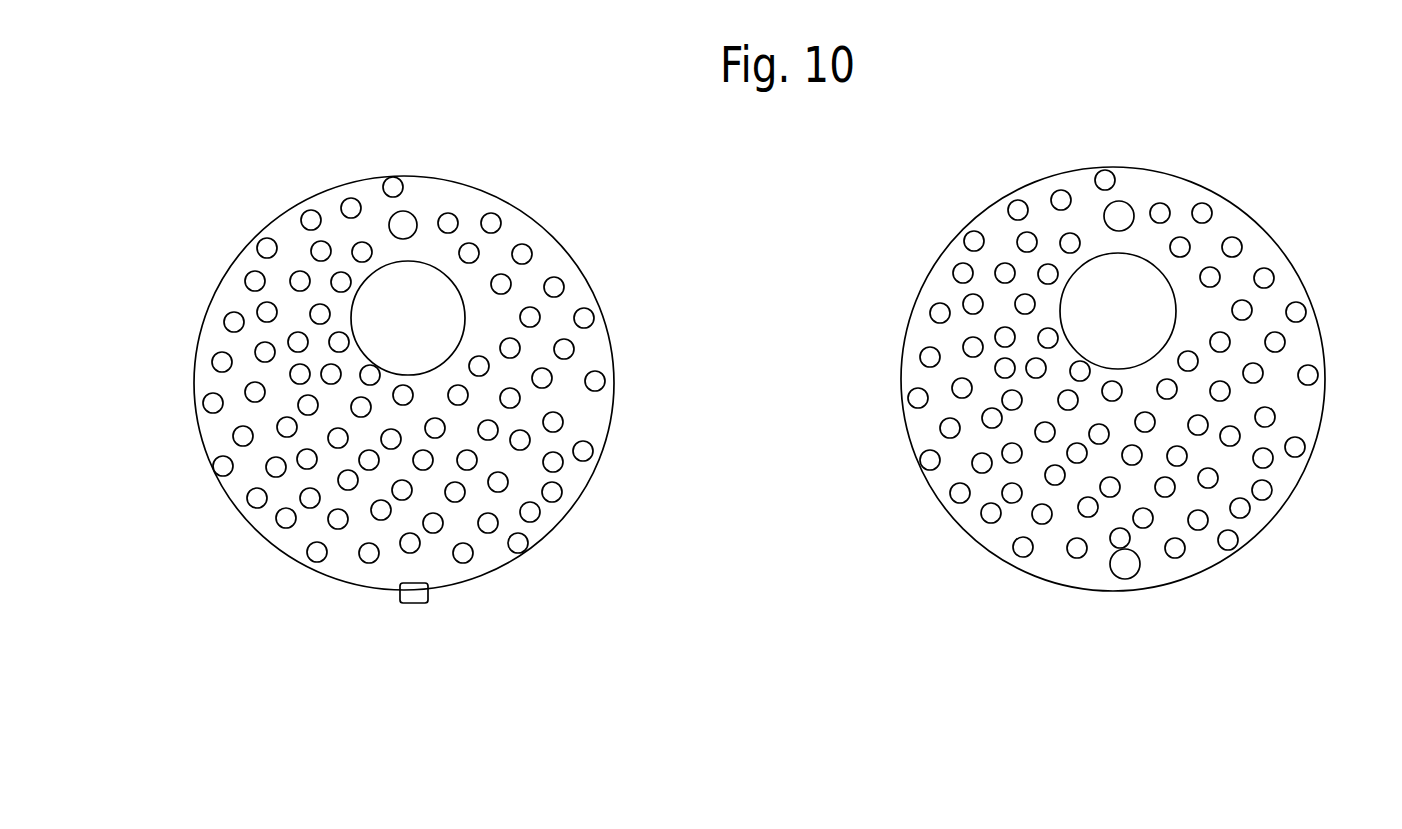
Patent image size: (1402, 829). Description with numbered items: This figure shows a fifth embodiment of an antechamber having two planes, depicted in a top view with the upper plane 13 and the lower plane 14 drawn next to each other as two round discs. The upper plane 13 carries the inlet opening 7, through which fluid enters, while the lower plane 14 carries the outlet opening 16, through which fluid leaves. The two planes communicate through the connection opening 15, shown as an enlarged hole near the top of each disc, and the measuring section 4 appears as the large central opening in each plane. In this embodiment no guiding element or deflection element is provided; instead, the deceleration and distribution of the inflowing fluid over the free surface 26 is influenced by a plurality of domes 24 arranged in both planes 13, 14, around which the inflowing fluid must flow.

The measuring section 4 is at (427, 311).
The inlet opening 7 is at (410, 606).
The upper plane 13 is at (508, 580).
The lower plane 14 is at (975, 554).
The connection opening 15 is at (391, 225).
The outlet opening 16 is at (1125, 586).
The dome 24 is at (248, 392).
The free surface 26 is at (586, 415).